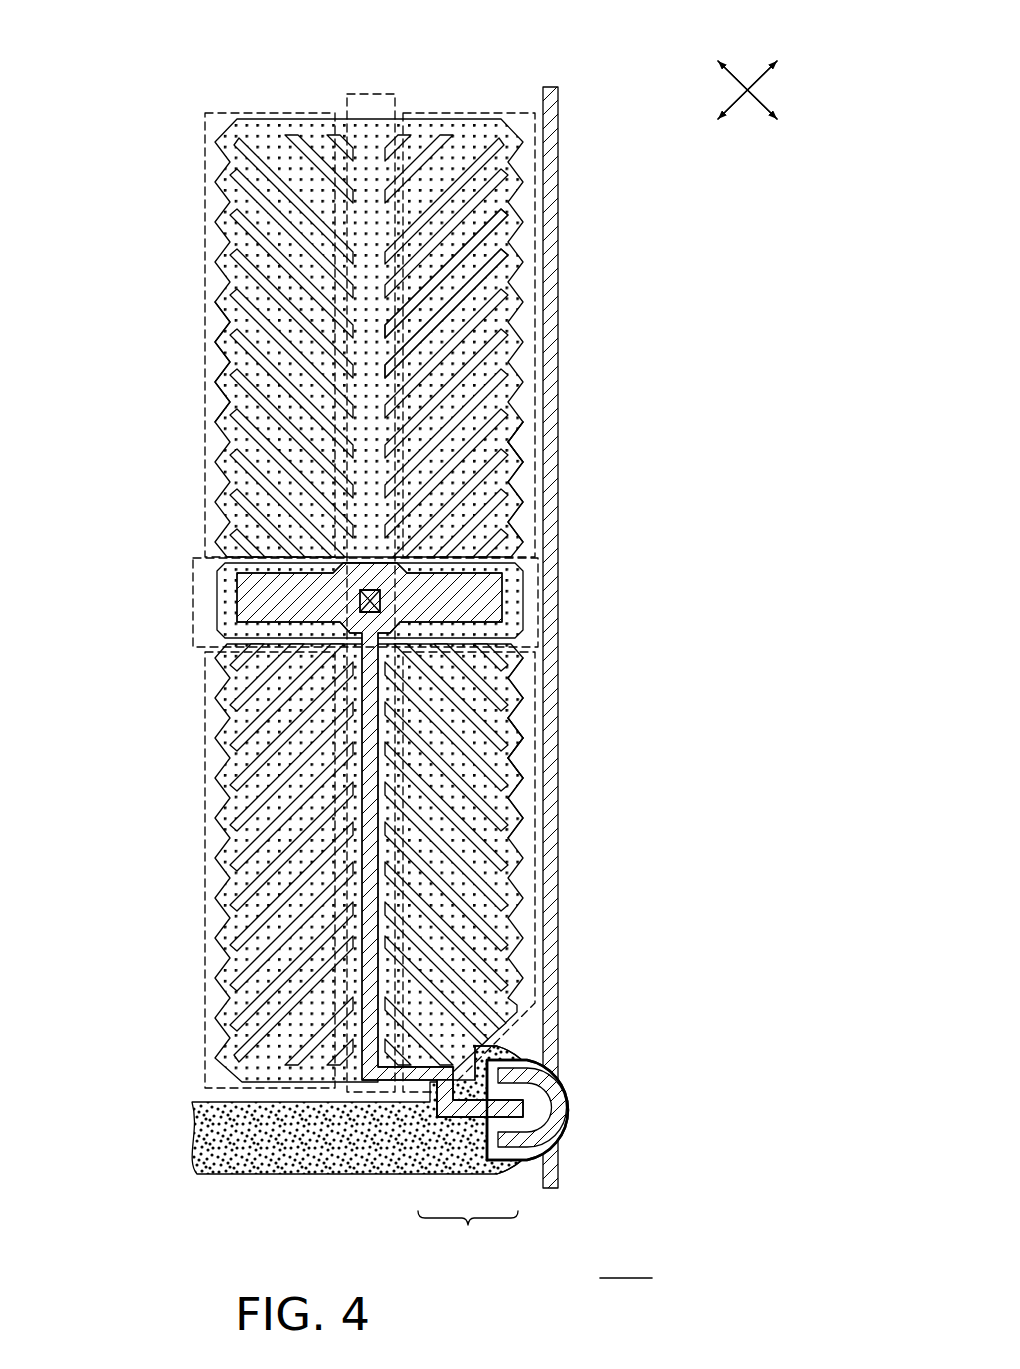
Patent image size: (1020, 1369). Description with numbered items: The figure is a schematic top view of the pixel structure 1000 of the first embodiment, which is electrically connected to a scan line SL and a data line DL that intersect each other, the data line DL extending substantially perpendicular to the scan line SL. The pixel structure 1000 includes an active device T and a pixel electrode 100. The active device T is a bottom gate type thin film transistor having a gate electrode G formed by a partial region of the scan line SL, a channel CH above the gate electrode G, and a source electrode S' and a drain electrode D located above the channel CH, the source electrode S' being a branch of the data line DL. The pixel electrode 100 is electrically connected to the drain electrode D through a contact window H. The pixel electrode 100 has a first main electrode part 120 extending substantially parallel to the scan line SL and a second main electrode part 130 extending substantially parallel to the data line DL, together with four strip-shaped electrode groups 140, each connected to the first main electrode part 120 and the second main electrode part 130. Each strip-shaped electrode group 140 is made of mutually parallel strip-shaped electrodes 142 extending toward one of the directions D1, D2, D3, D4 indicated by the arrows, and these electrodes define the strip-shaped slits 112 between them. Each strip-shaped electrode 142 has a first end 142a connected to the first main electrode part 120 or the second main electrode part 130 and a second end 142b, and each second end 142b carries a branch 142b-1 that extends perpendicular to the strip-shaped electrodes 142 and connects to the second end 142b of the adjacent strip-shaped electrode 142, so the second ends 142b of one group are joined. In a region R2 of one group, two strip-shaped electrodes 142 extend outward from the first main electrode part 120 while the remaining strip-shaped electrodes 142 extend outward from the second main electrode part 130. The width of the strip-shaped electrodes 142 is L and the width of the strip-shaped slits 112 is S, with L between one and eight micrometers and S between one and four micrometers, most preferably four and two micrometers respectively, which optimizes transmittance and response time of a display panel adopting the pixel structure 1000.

The pixel electrode 100 is at (191, 106).
The second main electrode part 130 is at (366, 548).
The strip-shaped electrode group 140 is at (377, 600).
The strip-shaped electrode 142 is at (221, 344).
The first end 142a is at (435, 658).
The second end 142b is at (522, 723).
The branch 142b-1 is at (501, 725).
The strip-shaped slit 112 is at (234, 452).
The first main electrode part 120 is at (540, 560).
The contact window H is at (357, 602).
The region R2 is at (525, 443).
The width of the strip-shaped slits S is at (495, 273).
The width of the strip-shaped electrodes L is at (441, 278).
The data line DL is at (549, 87).
The scan line SL is at (222, 1128).
The active device T is at (493, 1162).
The drain electrode D is at (477, 1123).
The channel CH is at (506, 1144).
The gate electrode G is at (515, 1165).
The source electrode S' is at (532, 1144).
The direction D1 is at (759, 79).
The direction D2 is at (733, 79).
The direction D3 is at (734, 106).
The direction D4 is at (759, 106).
The pixel structure 1000 is at (626, 1262).